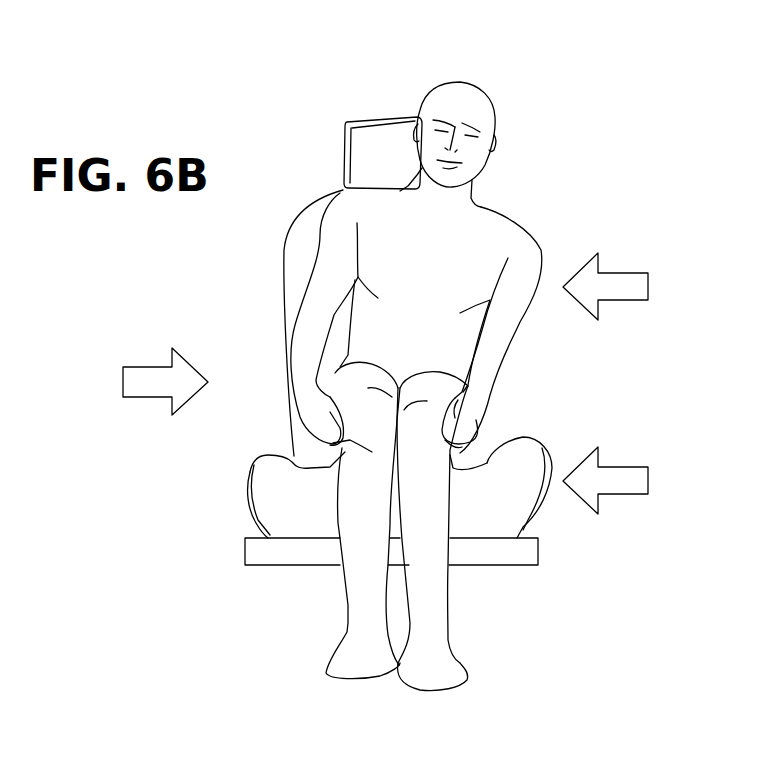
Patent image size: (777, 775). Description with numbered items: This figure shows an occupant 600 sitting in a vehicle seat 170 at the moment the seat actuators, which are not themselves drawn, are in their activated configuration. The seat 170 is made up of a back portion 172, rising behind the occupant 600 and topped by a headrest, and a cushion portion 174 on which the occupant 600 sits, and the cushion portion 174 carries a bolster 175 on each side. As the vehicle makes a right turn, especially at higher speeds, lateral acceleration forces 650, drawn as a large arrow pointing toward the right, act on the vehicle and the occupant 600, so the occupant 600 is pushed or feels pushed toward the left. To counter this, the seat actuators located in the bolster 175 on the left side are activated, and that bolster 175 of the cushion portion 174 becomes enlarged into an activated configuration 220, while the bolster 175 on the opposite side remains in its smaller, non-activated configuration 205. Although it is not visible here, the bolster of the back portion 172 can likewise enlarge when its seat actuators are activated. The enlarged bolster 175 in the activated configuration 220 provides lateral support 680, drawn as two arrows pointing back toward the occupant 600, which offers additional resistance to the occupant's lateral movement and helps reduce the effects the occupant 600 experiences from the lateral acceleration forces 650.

The seat 170 is at (340, 163).
The back portion 172 is at (280, 258).
The occupant 600 is at (510, 217).
The non-activated configuration 205 is at (258, 450).
The activated configuration 220 is at (538, 432).
The bolster 175 is at (255, 508).
The cushion portion 174 is at (537, 510).
The lateral acceleration forces 650 is at (150, 397).
The lateral support 680 is at (625, 273).